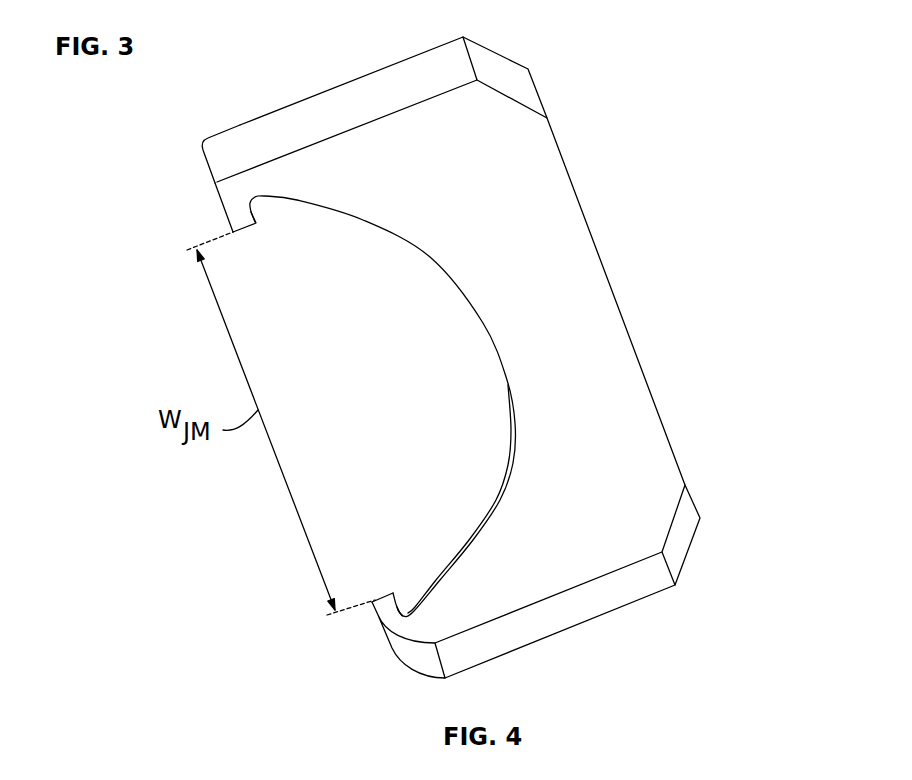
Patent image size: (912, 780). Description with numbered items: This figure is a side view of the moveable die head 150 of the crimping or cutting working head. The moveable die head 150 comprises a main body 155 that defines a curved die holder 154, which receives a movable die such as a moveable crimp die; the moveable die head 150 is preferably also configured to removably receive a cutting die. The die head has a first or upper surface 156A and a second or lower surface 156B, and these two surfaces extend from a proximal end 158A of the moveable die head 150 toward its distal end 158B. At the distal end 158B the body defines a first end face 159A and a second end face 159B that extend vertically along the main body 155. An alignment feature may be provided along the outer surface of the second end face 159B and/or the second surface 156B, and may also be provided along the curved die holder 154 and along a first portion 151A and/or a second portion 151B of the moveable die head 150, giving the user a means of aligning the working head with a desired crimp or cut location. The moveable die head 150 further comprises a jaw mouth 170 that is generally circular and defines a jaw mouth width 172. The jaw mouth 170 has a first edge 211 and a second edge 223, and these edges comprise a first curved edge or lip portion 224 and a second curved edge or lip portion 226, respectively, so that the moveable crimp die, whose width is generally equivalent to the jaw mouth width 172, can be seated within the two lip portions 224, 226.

The moveable die head 150 is at (636, 181).
The first portion 151A is at (497, 72).
The second portion 151B is at (685, 542).
The curved die holder 154 is at (478, 343).
The main body 155 is at (497, 182).
The first or upper surface 156A is at (340, 95).
The second or lower surface 156B is at (563, 613).
The proximal end 158A is at (645, 368).
The distal end 158B is at (135, 383).
The first end face 159A is at (217, 182).
The second end face 159B is at (393, 647).
The jaw mouth 170 is at (279, 526).
The jaw mouth width 172 is at (162, 470).
The first edge 211 is at (222, 210).
The second edge 223 is at (371, 603).
The first curved edge or lip portion 224 is at (257, 213).
The second curved edge or lip portion 226 is at (400, 600).